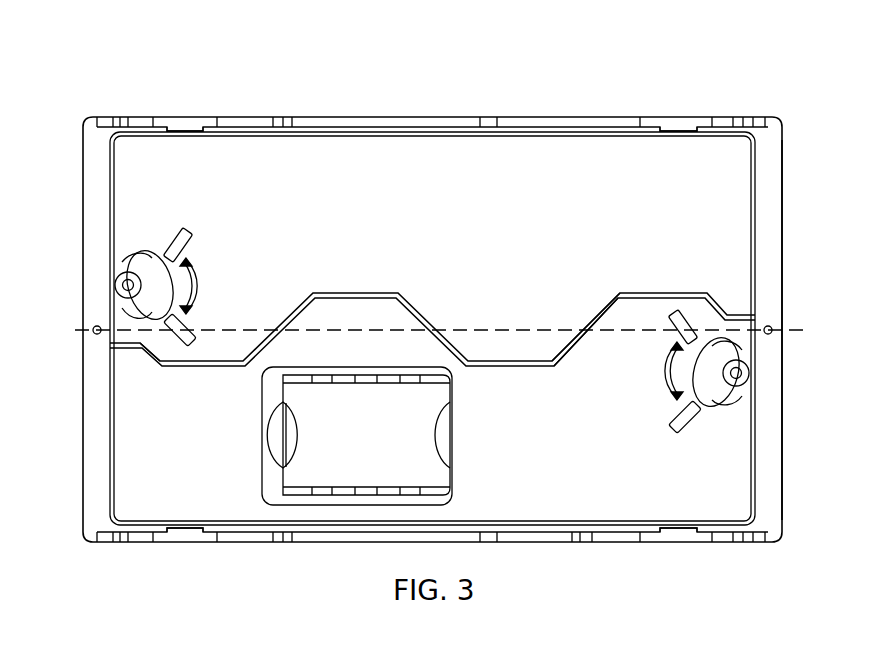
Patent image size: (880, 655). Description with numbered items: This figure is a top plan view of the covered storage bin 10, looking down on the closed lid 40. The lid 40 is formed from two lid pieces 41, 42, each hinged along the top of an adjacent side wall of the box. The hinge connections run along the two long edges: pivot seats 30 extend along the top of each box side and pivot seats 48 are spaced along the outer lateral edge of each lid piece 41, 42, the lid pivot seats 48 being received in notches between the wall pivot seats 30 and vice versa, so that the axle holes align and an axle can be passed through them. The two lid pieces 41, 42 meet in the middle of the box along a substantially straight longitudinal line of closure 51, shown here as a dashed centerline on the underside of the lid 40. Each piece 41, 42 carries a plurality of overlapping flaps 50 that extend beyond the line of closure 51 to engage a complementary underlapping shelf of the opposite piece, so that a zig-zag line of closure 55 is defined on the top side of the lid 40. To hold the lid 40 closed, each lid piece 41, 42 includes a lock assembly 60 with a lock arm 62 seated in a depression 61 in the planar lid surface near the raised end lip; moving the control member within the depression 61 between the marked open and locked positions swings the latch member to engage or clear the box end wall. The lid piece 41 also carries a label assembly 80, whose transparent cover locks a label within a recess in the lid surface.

The storage bin 10 is at (428, 78).
The pivot seats 30 is at (140, 117).
The lid 40 is at (795, 143).
The lid piece 41 is at (790, 452).
The lid piece 42 is at (790, 192).
The pivot seats 48 is at (112, 117).
The overlapping flaps 50 is at (432, 330).
The line of closure 51 is at (810, 328).
The zig-zag line of closure 55 is at (596, 305).
The lock assembly 60 is at (220, 268).
The depression 61 is at (165, 288).
The lock arm 62 is at (122, 272).
The label assembly 80 is at (462, 458).